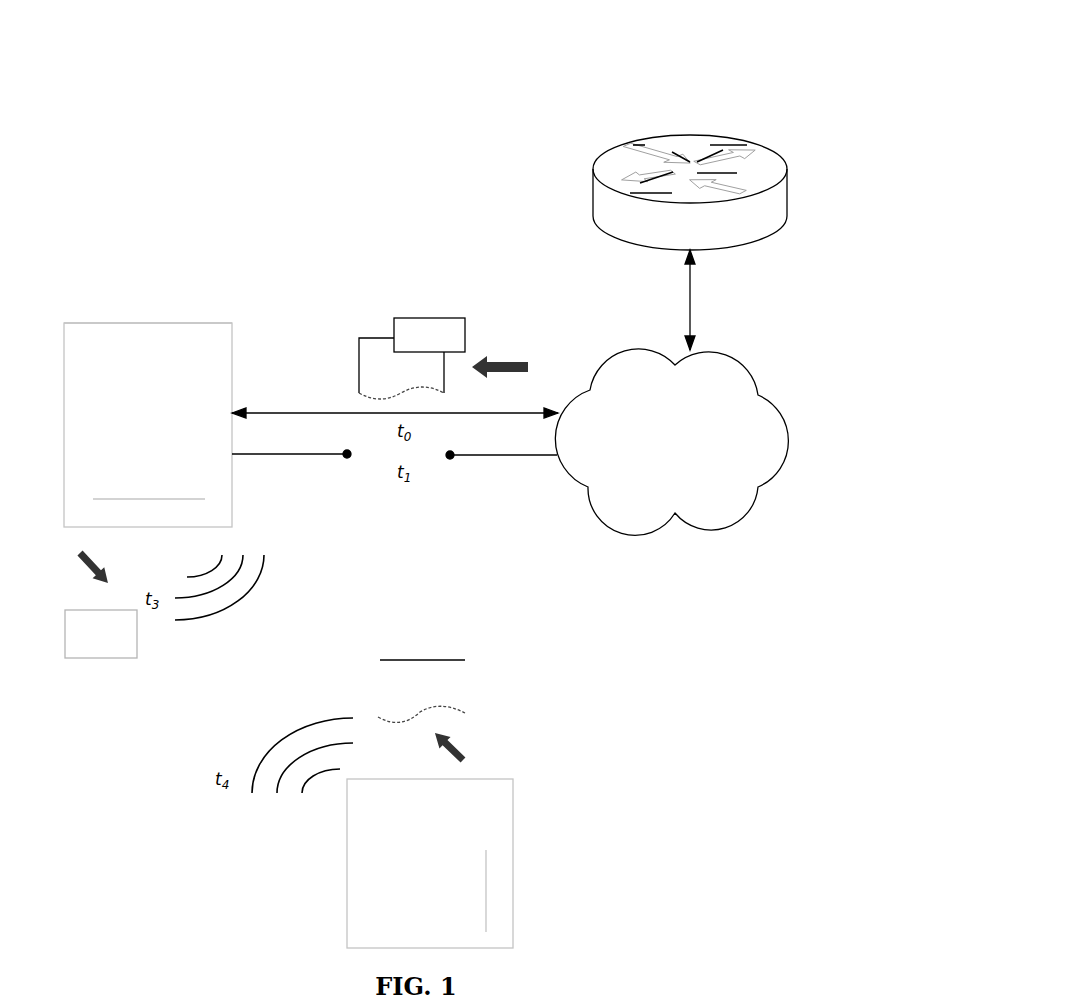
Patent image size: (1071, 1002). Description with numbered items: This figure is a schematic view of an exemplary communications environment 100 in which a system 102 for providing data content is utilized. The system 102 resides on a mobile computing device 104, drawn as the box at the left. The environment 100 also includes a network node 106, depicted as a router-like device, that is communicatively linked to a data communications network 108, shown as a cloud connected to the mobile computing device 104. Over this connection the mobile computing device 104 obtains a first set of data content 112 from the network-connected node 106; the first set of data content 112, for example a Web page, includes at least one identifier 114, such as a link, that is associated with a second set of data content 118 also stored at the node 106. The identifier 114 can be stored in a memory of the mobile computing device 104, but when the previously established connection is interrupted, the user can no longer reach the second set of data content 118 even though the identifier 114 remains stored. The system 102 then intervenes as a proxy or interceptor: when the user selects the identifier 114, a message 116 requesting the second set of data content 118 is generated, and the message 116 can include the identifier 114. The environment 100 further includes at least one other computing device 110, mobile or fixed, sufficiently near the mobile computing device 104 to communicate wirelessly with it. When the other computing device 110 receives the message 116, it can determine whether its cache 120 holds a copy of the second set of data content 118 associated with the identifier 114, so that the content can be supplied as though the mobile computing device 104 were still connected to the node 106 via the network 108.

The communications environment 100 is at (738, 30).
The system 102 is at (148, 425).
The mobile computing device 104 is at (148, 346).
The network node 106 is at (593, 213).
The data communications network 108 is at (671, 442).
The other computing device 110 is at (430, 863).
The first set of data content 112 is at (401, 368).
The identifier 114 is at (429, 335).
The message 116 is at (101, 634).
The second set of data content 118 is at (421, 691).
The cache 120 is at (450, 891).